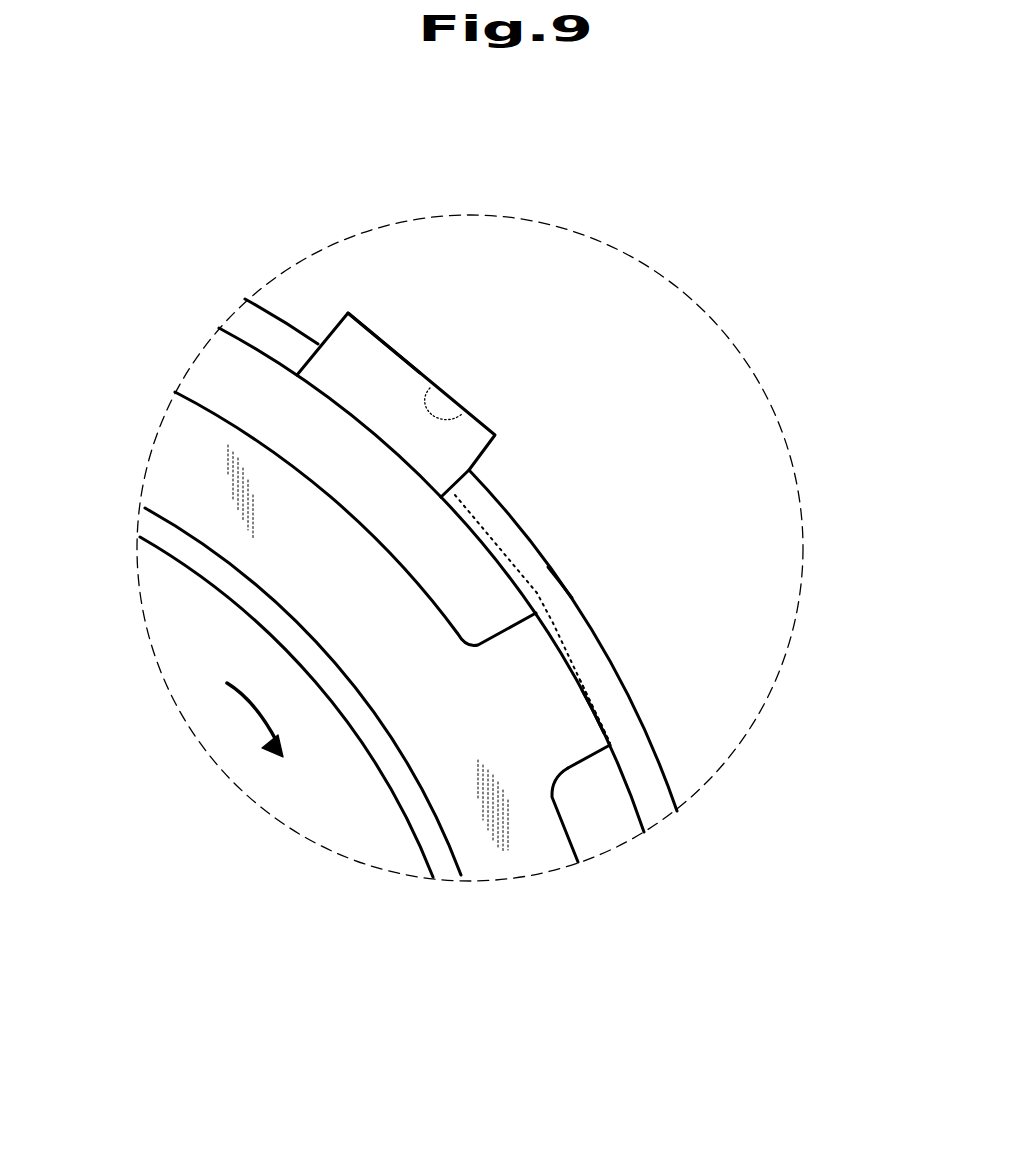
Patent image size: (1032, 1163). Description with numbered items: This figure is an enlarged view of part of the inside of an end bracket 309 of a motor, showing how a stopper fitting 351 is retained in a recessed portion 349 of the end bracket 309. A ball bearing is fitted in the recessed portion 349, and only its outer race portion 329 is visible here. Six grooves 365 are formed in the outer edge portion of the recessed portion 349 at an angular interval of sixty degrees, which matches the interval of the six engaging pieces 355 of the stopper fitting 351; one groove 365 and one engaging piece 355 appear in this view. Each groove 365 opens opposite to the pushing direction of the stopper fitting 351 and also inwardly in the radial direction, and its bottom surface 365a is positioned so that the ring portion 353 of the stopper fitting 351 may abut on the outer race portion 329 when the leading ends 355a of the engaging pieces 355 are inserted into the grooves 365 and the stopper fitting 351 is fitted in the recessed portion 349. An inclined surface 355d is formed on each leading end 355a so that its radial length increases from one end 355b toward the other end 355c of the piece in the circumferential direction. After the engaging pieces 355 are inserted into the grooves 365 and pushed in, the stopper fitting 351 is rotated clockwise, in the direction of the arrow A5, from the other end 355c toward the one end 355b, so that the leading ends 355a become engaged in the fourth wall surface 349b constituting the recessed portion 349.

The end bracket 309 is at (645, 402).
The outer race portion 329 is at (247, 593).
The recessed portion 349 is at (228, 382).
The fourth wall surface 349b is at (557, 620).
The stopper fitting 351 is at (472, 807).
The ring portion 353 is at (515, 827).
The engaging piece 355 is at (570, 715).
The leading end 355a is at (587, 688).
The one end 355b is at (610, 747).
The other end 355c is at (540, 610).
The inclined surface 355d is at (587, 677).
The groove 365 is at (467, 410).
The bottom surface 365a is at (355, 350).
The arrow A5 is at (260, 717).